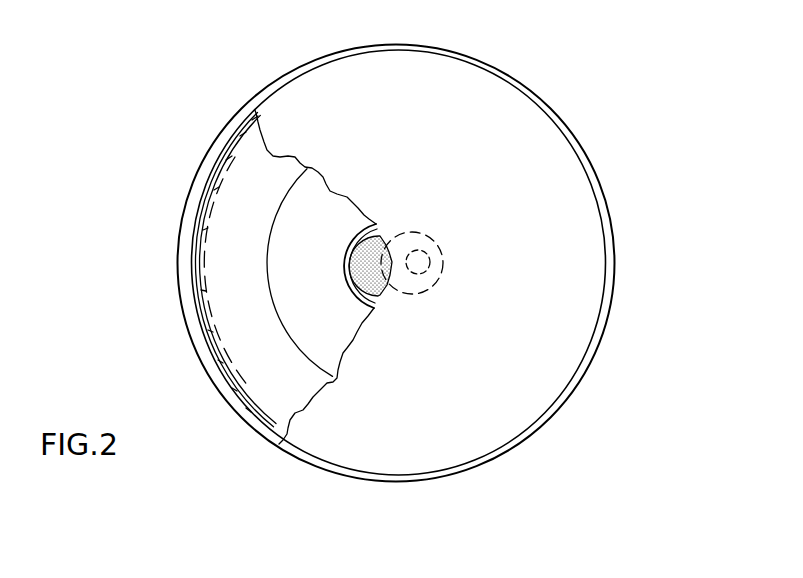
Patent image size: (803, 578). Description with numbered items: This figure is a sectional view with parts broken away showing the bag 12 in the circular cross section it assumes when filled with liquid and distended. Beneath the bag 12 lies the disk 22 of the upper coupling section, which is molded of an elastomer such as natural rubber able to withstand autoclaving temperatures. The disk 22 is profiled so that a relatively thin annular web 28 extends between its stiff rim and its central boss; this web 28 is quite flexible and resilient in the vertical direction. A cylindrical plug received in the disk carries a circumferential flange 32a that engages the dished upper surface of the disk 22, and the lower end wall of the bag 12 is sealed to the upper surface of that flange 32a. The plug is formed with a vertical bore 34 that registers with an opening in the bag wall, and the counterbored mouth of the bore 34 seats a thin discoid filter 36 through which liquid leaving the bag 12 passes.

The bag 12 is at (312, 64).
The disk 22 is at (197, 174).
The annular web 28 is at (232, 274).
The circumferential flange 32a is at (277, 213).
The vertical bore 34 is at (418, 250).
The discoid filter 36 is at (362, 266).